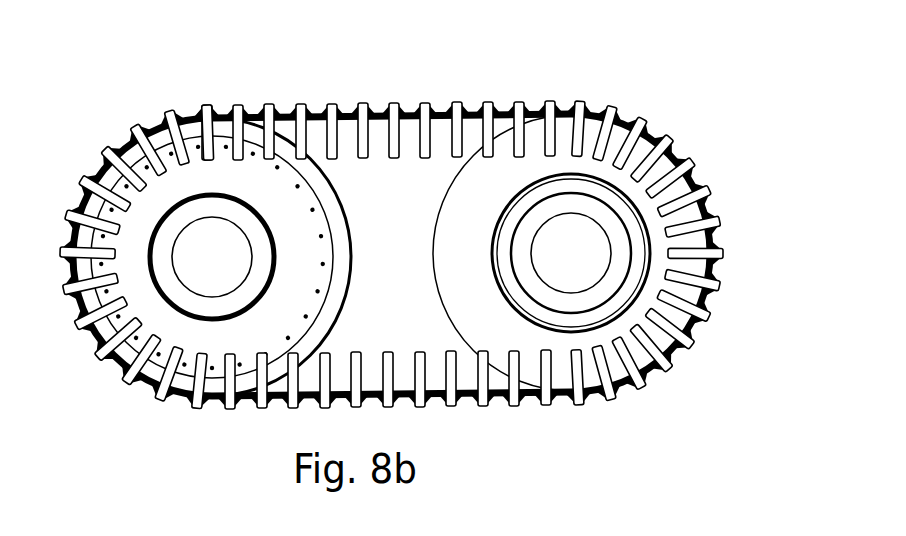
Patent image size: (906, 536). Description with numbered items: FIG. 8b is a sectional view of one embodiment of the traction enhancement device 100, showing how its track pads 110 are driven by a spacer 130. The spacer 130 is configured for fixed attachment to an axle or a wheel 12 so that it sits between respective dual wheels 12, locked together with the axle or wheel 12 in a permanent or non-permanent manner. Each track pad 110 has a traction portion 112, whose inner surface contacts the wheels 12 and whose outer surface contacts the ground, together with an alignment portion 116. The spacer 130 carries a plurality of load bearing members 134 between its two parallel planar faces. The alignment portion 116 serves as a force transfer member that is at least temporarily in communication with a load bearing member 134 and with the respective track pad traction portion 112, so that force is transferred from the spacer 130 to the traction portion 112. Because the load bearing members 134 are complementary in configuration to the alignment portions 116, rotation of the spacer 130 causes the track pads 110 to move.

The traction enhancement device 100 is at (740, 103).
The track pad 110 is at (493, 402).
The alignment portion 116 is at (237, 118).
The load bearing members 134 is at (192, 120).
The wheel 12 is at (342, 200).
The spacer 130 is at (160, 200).
The traction portion 112 is at (338, 208).